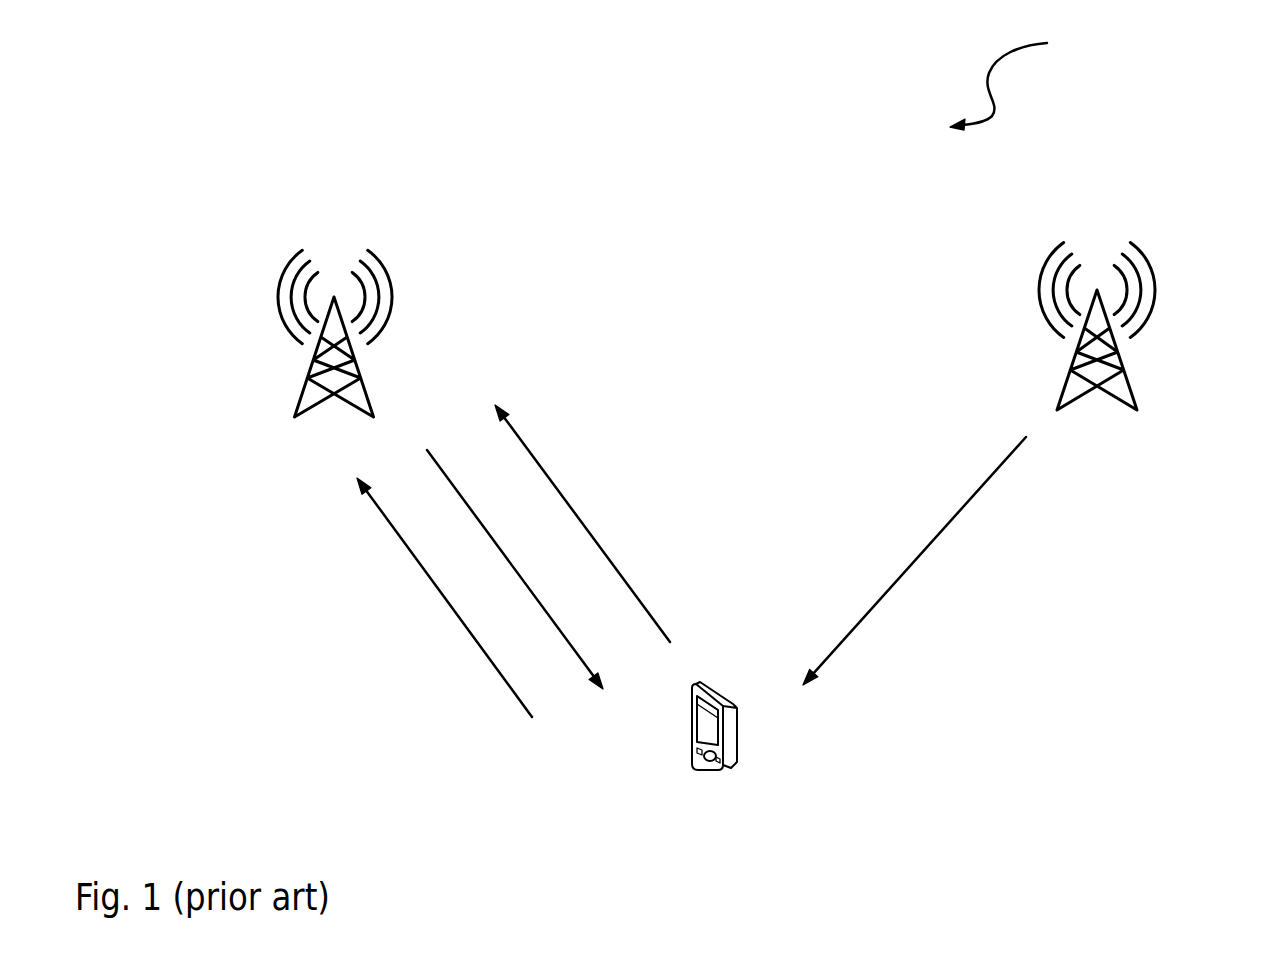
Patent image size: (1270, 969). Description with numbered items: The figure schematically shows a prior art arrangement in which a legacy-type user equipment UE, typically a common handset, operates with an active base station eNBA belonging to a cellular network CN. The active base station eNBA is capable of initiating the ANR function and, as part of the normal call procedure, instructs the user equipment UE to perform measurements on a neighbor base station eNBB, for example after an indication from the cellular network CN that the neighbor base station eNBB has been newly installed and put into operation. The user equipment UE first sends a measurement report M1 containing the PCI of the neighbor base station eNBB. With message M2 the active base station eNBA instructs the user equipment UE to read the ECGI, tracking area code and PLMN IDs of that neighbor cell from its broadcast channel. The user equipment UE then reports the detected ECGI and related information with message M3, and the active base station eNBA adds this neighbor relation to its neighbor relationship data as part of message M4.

The active base station eNBA is at (292, 275).
The neighbor base station eNBB is at (1149, 290).
The user equipment UE is at (740, 753).
The cellular network CN is at (1025, 76).
The measurement report message M1 is at (582, 523).
The ECGI read instruction message M2 is at (515, 569).
The ECGI report message M3 is at (914, 561).
The neighbor relation update M4 is at (444, 597).